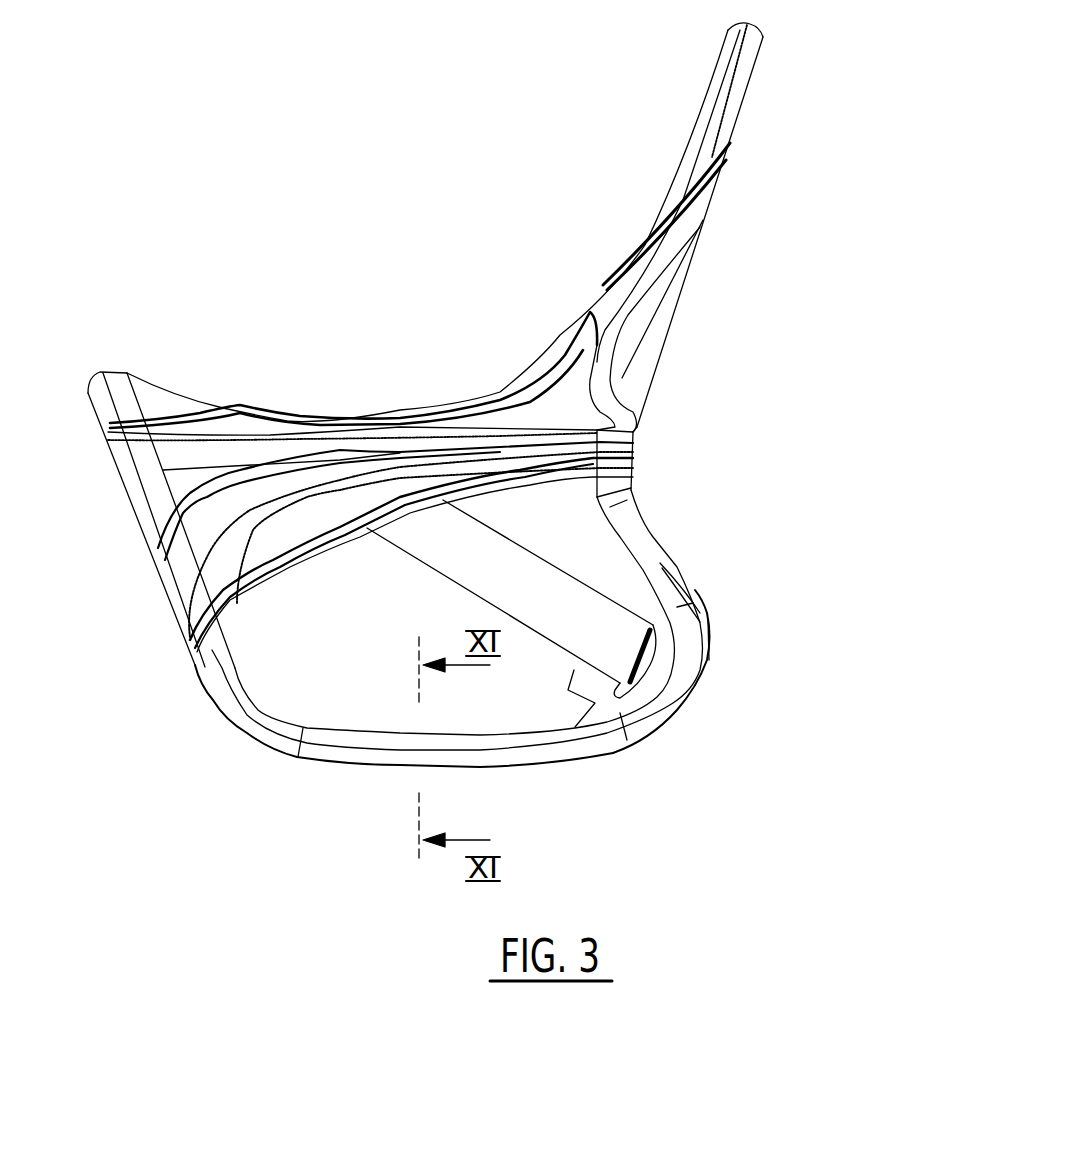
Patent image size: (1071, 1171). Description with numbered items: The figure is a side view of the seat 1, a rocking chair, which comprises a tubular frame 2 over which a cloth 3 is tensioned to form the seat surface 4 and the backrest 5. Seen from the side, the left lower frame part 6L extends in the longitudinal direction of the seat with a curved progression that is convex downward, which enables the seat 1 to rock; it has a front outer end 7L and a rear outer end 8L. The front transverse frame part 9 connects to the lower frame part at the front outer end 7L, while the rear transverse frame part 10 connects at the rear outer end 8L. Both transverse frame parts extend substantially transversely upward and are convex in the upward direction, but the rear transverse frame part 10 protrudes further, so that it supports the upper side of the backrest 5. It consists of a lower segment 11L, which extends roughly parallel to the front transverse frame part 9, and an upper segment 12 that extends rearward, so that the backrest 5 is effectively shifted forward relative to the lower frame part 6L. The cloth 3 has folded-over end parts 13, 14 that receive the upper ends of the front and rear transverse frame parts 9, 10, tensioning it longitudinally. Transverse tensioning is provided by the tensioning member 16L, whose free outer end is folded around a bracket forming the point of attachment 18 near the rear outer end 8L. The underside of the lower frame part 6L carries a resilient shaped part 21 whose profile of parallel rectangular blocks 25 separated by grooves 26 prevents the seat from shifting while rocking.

The seat 1 is at (322, 172).
The frame 2 is at (345, 700).
The cloth 3 is at (528, 303).
The seat surface 4 is at (405, 414).
The backrest 5 is at (655, 198).
The lower frame part 6L is at (513, 740).
The front outer end 7L is at (260, 715).
The rear outer end 8L is at (660, 703).
The front transverse frame part 9 is at (277, 643).
The rear transverse frame part 10 is at (693, 397).
The lower segment 11L is at (643, 540).
The upper segment 12 is at (663, 307).
The folded-over end part 13 is at (123, 480).
The folded-over end part 14 is at (735, 103).
The tensioning member 16L is at (547, 615).
The point of attachment 18 is at (587, 695).
The shaped part 21 is at (697, 637).
The rectangular block 25 is at (708, 614).
The groove 26 is at (387, 767).